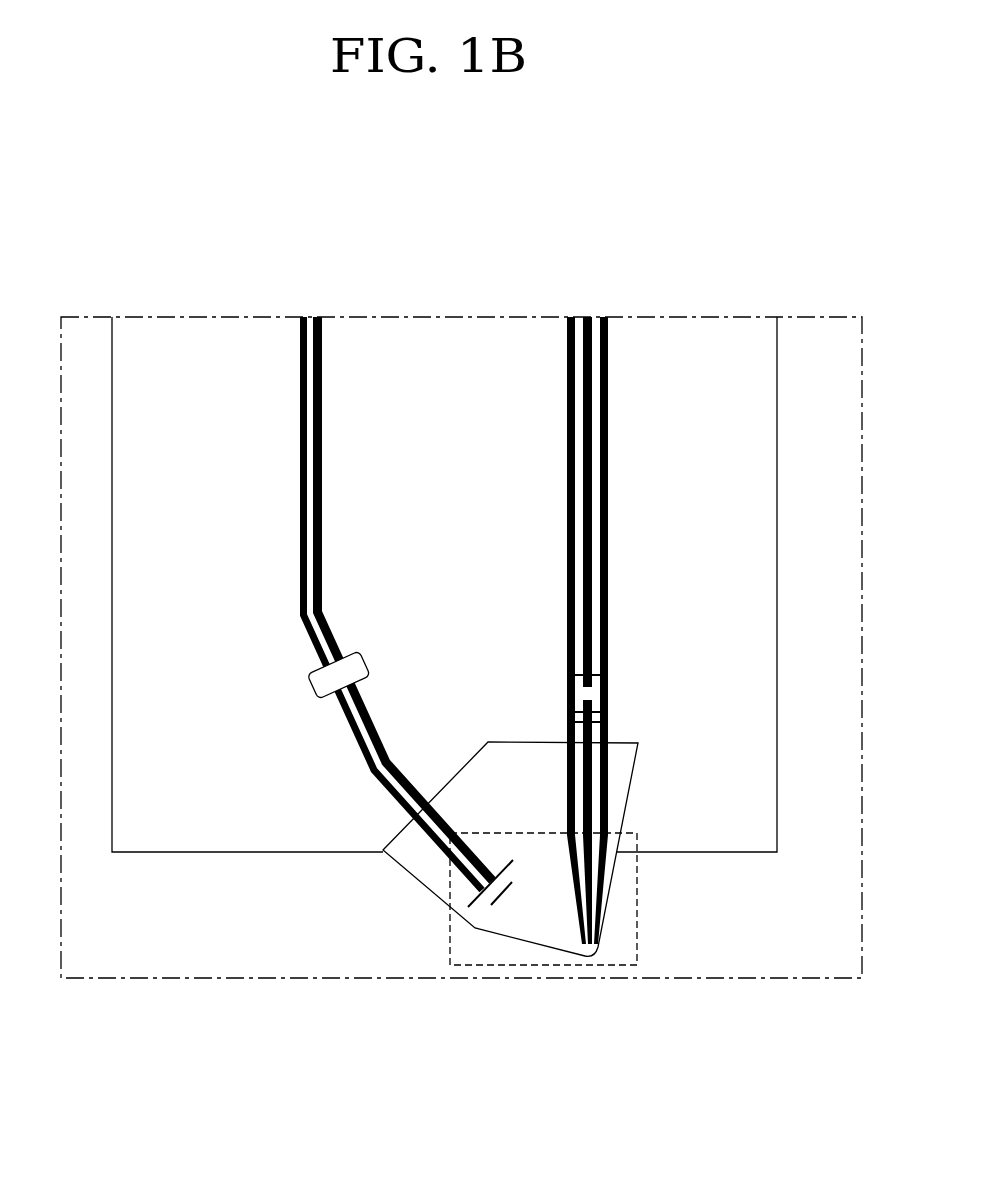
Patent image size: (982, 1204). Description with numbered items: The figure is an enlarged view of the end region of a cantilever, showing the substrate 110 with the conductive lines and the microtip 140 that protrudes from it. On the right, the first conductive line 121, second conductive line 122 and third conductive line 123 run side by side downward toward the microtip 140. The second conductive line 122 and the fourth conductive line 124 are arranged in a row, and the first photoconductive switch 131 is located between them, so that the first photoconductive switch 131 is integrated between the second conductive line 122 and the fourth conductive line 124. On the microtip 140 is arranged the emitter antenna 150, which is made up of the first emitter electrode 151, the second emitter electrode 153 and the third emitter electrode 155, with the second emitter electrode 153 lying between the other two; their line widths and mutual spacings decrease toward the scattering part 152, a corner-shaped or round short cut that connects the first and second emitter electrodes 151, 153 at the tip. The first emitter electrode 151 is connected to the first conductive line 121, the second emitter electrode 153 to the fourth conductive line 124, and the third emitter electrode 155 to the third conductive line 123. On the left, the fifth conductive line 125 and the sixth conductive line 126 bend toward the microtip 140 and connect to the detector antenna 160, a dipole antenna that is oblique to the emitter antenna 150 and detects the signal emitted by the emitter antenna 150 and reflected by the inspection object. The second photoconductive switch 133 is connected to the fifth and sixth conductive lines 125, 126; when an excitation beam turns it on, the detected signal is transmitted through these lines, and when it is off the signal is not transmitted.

The substrate 110 is at (750, 603).
The first conductive line 121 is at (608, 538).
The second conductive line 122 is at (592, 483).
The third conductive line 123 is at (567, 434).
The fourth conductive line 124 is at (592, 730).
The fifth conductive line 125 is at (300, 457).
The sixth conductive line 126 is at (377, 733).
The first photoconductive switch 131 is at (618, 692).
The second photoconductive switch 133 is at (305, 673).
The microtip 140 is at (530, 930).
The emitter antenna 150 is at (728, 793).
The first emitter electrode 151 is at (608, 788).
The scattering part 152 is at (612, 945).
The second emitter electrode 153 is at (592, 868).
The third emitter electrode 155 is at (587, 905).
The detector antenna 160 is at (450, 886).